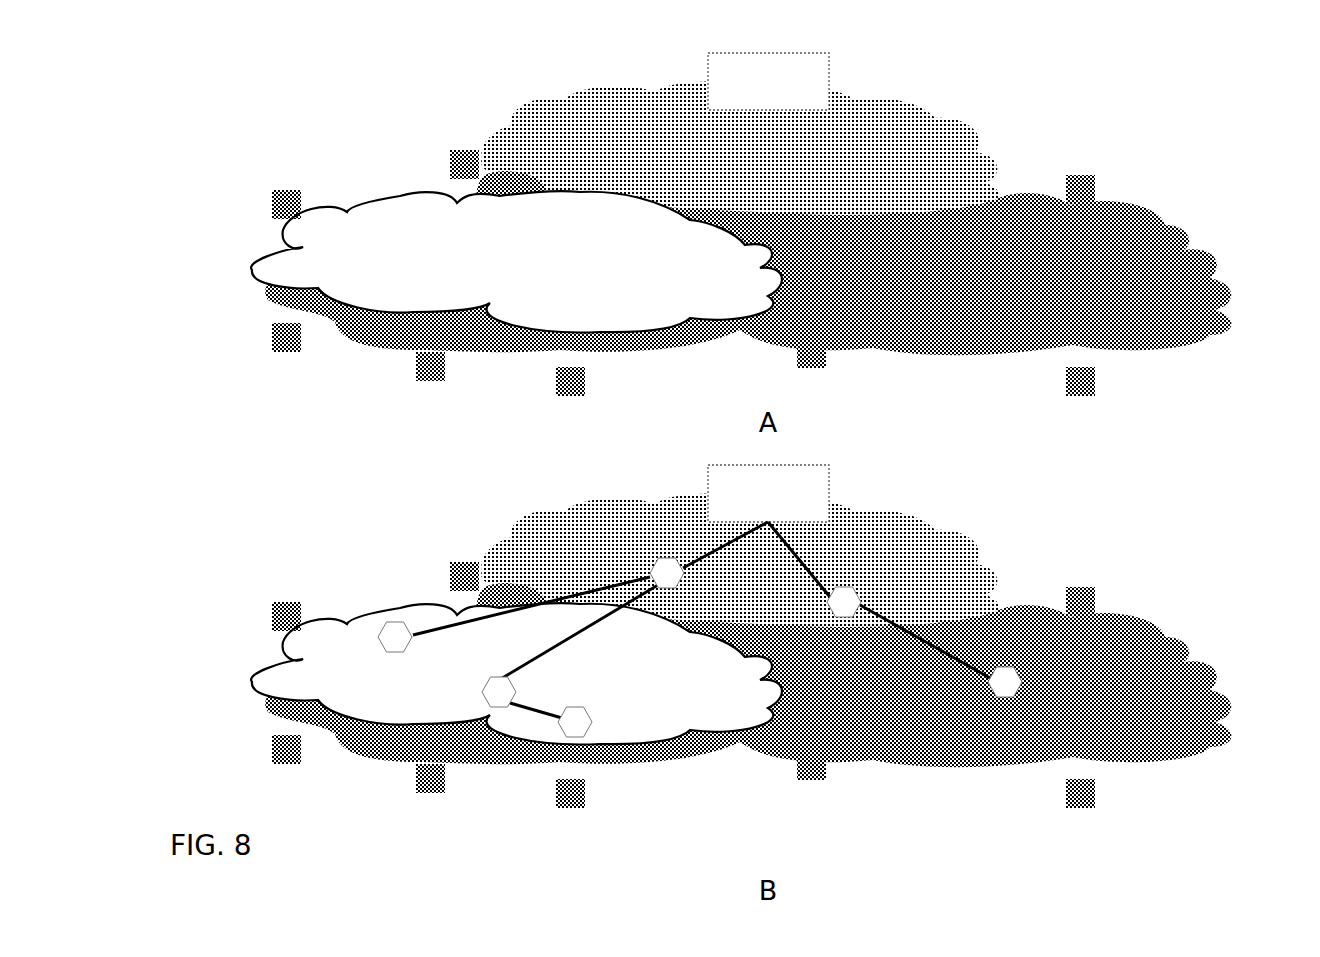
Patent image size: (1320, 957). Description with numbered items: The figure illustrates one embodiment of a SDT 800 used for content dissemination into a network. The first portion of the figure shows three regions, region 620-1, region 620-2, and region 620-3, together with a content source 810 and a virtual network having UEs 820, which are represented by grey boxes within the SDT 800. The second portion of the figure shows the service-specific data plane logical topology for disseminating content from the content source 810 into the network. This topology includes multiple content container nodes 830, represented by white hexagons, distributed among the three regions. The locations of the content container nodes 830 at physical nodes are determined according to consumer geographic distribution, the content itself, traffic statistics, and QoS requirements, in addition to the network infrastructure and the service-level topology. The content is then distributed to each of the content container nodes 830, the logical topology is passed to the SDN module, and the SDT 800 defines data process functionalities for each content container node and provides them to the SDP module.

The SDT 800 is at (242, 112).
The content source 810 is at (757, 101).
The UEs 820 is at (272, 203).
The content container nodes 830 is at (973, 764).
The region 620-1 is at (550, 108).
The region 620-2 is at (252, 265).
The region 620-3 is at (1218, 338).